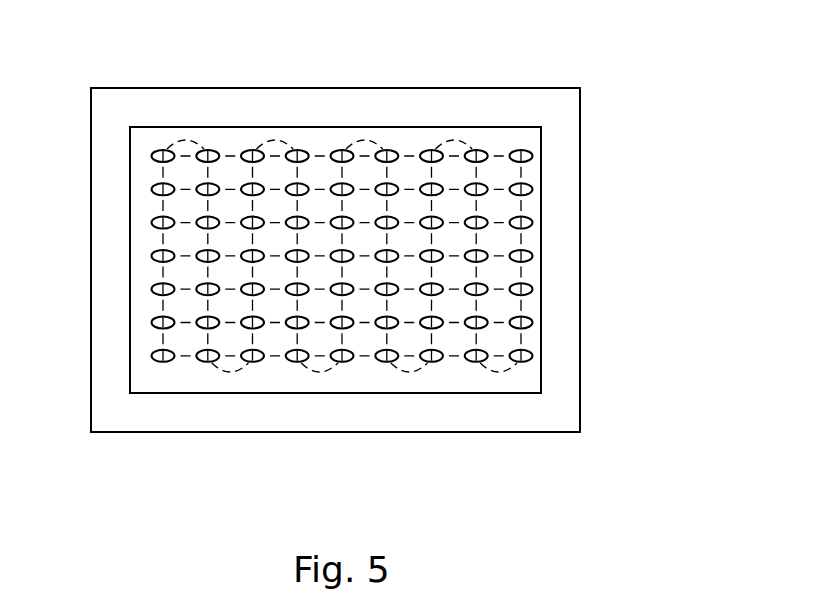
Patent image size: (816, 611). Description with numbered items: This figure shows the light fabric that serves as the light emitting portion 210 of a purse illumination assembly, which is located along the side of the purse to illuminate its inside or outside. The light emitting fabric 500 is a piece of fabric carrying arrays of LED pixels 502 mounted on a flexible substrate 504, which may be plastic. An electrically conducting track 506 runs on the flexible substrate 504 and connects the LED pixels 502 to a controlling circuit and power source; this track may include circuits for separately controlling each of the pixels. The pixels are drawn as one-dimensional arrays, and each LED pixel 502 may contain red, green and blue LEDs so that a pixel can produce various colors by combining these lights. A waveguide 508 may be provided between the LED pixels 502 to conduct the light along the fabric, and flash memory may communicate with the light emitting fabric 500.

The light emitting portion 210 is at (388, 106).
The light emitting fabric 500 is at (563, 412).
The LED pixels 502 is at (528, 151).
The flexible substrate 504 is at (198, 393).
The electrically conducting track 506 is at (520, 199).
The waveguide 508 is at (358, 317).